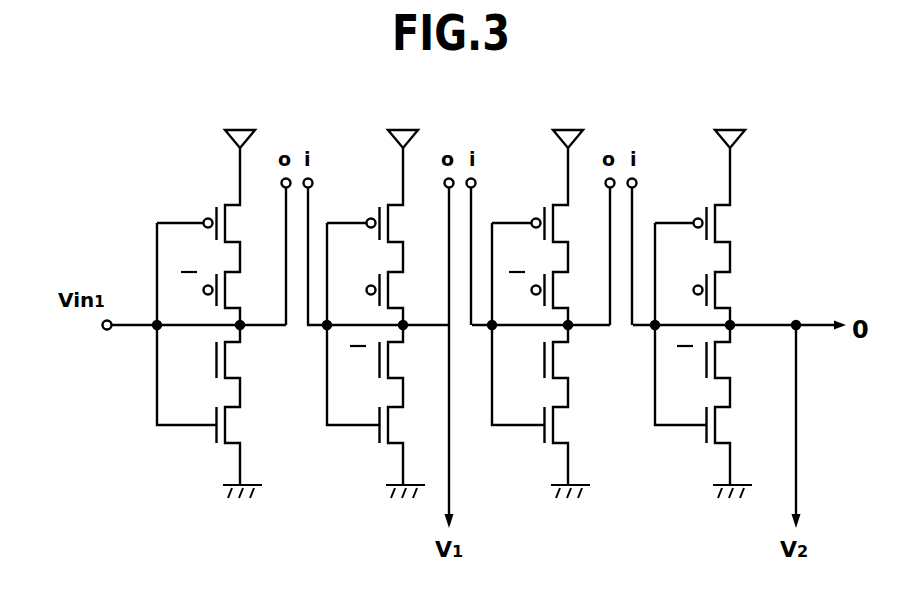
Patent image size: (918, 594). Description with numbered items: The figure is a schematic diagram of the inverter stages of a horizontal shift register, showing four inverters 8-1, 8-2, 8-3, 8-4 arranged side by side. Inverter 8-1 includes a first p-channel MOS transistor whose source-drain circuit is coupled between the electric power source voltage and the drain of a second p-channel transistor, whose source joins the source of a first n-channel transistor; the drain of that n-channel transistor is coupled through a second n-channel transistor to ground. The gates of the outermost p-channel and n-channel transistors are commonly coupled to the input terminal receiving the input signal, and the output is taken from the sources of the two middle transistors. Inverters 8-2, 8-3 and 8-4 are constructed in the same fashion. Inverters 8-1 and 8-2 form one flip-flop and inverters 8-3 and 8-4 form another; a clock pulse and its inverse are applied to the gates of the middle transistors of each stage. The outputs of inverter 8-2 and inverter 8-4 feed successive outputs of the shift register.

The inverter 8-1 is at (210, 326).
The inverter 8-2 is at (379, 327).
The inverter 8-3 is at (544, 327).
The inverter 8-4 is at (703, 327).